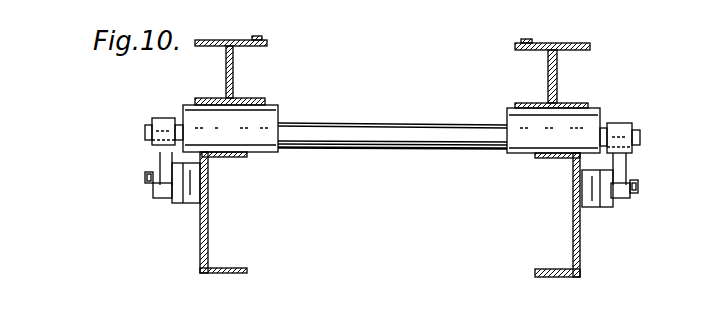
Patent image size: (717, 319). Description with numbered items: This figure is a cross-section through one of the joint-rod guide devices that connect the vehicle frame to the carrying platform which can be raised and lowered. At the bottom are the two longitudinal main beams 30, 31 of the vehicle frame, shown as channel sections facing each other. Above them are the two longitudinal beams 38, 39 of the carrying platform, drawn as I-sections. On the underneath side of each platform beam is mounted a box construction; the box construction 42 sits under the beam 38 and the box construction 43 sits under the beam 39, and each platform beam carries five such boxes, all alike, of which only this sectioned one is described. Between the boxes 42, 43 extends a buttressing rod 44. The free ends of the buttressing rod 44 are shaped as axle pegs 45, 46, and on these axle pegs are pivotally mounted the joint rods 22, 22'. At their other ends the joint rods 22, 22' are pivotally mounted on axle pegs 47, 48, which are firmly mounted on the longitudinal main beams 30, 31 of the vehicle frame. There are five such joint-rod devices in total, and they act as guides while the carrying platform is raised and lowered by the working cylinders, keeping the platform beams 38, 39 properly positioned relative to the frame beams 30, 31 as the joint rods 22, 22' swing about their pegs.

The joint rod 22 is at (150, 177).
The joint rod 22' is at (636, 179).
The longitudinal main beam 30 is at (203, 230).
The longitudinal main beam 31 is at (582, 244).
The longitudinal beam 38 is at (237, 68).
The longitudinal beam 39 is at (548, 68).
The box construction 42 is at (264, 118).
The box construction 43 is at (592, 118).
The buttressing rod 44 is at (390, 130).
The axle peg 45 is at (150, 130).
The axle peg 46 is at (640, 130).
The axle peg 47 is at (147, 183).
The axle peg 48 is at (640, 188).